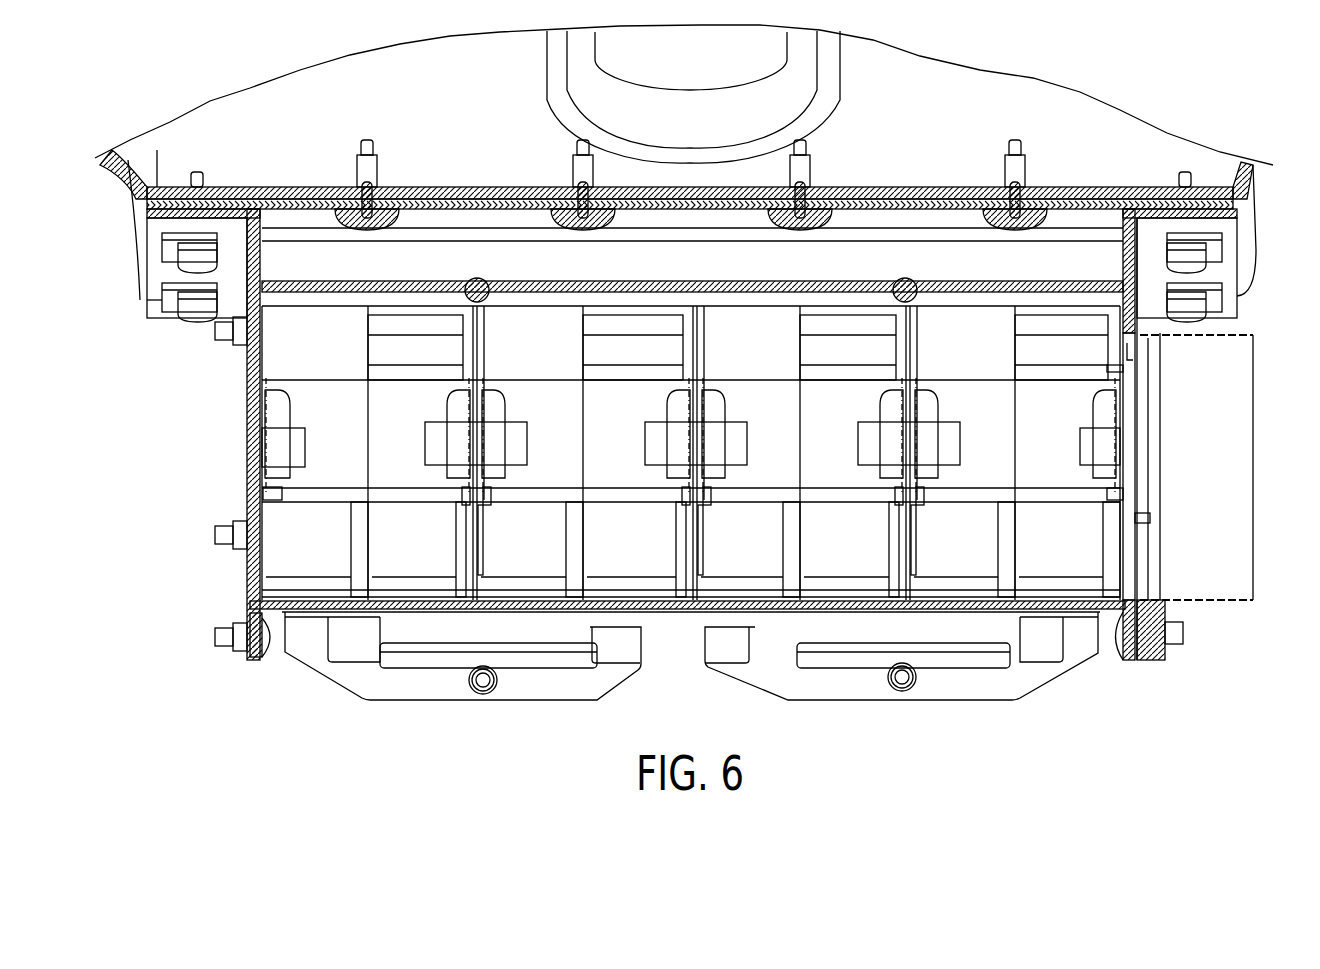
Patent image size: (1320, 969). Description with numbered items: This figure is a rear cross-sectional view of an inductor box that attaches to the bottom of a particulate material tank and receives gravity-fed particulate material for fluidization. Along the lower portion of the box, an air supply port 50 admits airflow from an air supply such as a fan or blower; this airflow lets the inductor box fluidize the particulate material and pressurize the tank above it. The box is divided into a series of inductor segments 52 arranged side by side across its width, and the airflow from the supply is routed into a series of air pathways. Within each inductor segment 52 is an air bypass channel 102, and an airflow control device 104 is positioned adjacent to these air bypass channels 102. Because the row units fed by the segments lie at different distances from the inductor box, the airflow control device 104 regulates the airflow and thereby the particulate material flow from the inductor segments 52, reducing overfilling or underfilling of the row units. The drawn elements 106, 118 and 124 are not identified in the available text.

The air supply port 50 is at (1253, 600).
The inductor segments 52 is at (303, 270).
The air bypass channels 102 is at (290, 407).
The airflow control device 104 is at (283, 482).
The end connector 106 is at (297, 378).
The battery cell 118 is at (303, 585).
The bus bar 124 is at (306, 437).